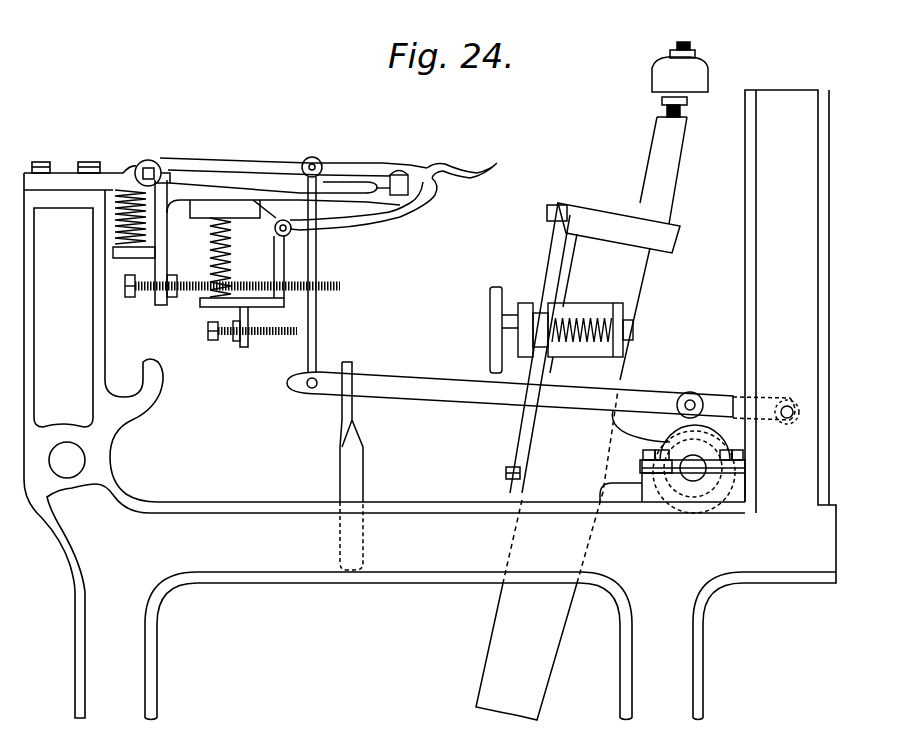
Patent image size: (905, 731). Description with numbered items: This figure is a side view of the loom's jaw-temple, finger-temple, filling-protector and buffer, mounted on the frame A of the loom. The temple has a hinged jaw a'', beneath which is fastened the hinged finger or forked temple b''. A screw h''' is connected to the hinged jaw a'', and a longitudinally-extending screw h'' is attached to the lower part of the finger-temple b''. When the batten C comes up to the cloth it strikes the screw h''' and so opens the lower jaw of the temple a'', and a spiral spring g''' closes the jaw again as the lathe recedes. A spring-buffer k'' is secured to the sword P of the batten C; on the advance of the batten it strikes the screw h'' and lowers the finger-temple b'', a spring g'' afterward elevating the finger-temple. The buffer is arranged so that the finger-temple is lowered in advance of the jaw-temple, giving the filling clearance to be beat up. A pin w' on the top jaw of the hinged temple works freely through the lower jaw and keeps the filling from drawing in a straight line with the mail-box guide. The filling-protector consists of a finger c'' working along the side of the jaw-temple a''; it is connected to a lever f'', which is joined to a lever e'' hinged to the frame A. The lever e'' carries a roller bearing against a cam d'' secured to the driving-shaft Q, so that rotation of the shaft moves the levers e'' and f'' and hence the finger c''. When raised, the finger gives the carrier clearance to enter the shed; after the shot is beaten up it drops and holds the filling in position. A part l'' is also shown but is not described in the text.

The frame A is at (430, 405).
The sword P is at (563, 461).
The batten C is at (633, 176).
The driving-shaft Q is at (672, 469).
The cam d'' is at (717, 472).
The lever e'' is at (543, 407).
The spring-buffer k'' is at (552, 330).
The blade l'' is at (339, 466).
The lever f'' is at (320, 264).
The hinged jaw-temple a'' is at (286, 194).
The pin w' is at (392, 165).
The finger c'' is at (462, 164).
The spiral spring g''' is at (129, 194).
The hinged finger or forked temple b'' is at (259, 263).
The spring g'' is at (234, 257).
The screw h''' is at (245, 283).
The screw h'' is at (252, 343).